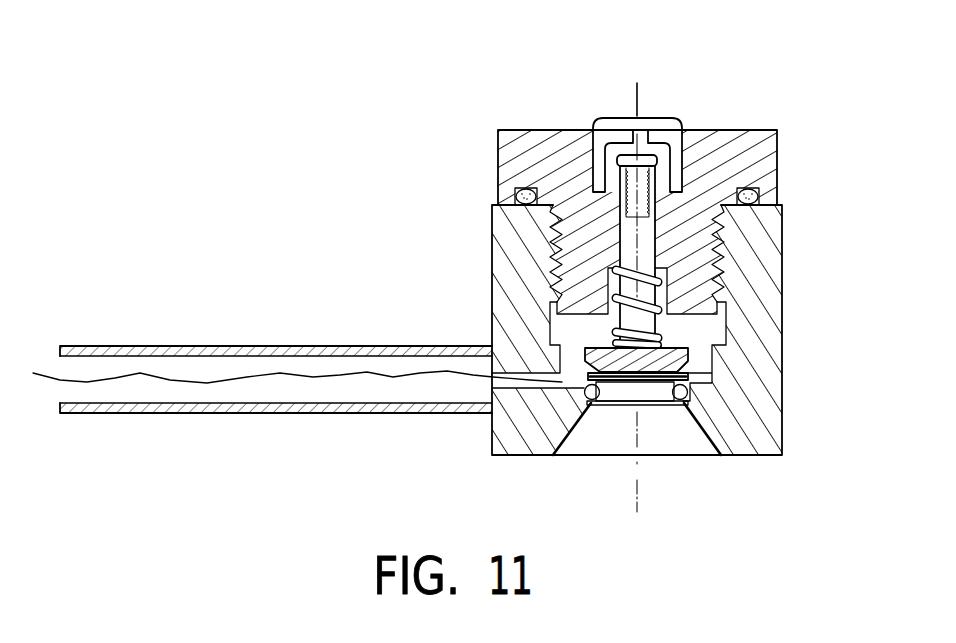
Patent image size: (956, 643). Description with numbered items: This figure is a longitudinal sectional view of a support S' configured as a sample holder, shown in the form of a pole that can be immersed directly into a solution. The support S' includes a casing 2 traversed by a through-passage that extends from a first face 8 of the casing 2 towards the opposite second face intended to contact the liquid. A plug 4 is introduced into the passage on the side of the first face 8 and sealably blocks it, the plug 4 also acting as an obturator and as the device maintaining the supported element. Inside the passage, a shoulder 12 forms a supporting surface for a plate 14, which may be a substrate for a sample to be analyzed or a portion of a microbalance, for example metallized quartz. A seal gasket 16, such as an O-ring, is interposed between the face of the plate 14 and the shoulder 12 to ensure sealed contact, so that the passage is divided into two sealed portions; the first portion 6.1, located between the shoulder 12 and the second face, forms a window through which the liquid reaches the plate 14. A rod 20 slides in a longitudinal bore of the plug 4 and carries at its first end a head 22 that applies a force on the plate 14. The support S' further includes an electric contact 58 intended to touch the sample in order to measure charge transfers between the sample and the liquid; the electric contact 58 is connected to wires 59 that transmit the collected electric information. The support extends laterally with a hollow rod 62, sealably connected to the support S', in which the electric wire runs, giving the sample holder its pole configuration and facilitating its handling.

The casing 2 is at (780, 300).
The plug 4 is at (746, 110).
The first face 8 is at (778, 193).
The rod 20 is at (622, 254).
The head 22 is at (668, 352).
The plate 14 is at (690, 378).
The electric contact 58 is at (640, 375).
The shoulder 12 is at (584, 392).
The seal gasket 16 is at (690, 398).
The first portion of the passage 6.1 is at (586, 388).
The hollow rod 62 is at (172, 408).
The wires 59 is at (313, 378).
The support S' is at (456, 152).